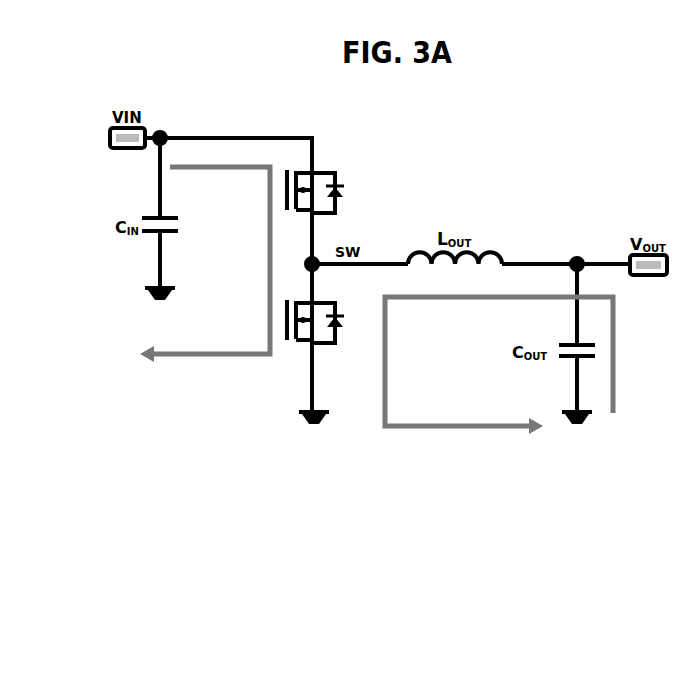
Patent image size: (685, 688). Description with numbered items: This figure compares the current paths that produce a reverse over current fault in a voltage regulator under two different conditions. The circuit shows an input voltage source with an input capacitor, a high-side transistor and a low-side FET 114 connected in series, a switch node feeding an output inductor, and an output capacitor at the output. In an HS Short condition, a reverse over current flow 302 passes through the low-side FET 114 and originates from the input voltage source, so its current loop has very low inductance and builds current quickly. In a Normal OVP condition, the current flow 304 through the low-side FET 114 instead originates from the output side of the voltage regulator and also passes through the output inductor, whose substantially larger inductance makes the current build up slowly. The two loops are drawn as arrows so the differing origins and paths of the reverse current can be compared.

The low-side FET 114 is at (302, 343).
The reverse over current flow 302 is at (215, 365).
The current flow 304 is at (388, 437).